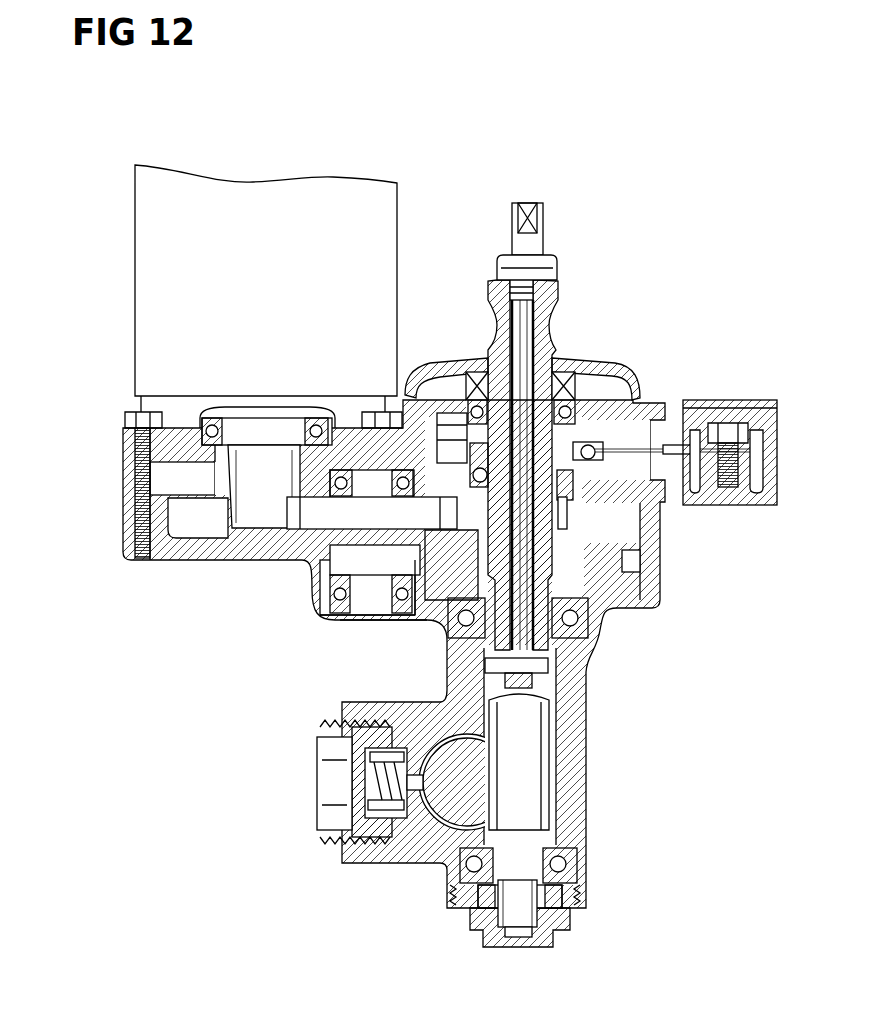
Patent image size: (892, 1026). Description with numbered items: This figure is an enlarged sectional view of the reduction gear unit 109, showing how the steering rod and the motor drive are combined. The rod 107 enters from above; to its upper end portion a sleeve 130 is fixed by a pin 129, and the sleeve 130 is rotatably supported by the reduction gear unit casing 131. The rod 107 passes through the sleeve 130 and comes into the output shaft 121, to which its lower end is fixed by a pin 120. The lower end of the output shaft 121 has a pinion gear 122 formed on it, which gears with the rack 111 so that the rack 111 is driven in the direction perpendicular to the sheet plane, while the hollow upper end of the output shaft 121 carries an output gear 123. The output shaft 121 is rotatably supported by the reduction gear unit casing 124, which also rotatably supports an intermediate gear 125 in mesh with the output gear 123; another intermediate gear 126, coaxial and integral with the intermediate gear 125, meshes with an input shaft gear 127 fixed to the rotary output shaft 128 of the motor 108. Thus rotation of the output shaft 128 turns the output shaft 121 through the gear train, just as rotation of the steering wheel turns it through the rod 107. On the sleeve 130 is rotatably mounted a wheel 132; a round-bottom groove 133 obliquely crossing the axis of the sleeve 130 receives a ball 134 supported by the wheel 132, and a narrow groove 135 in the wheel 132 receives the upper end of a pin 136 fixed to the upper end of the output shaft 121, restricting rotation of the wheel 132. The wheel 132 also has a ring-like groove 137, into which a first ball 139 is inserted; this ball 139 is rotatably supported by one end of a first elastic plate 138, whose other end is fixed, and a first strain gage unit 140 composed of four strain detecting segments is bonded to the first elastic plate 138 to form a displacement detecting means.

The rod 107 is at (546, 238).
The motor 108 is at (135, 278).
The reduction gear unit 109 is at (108, 518).
The rack 111 is at (430, 812).
The pin 120 is at (552, 672).
The output shaft 121 is at (582, 660).
The pinion gear 122 is at (580, 818).
The output gear 123 is at (640, 560).
The reduction gear unit casing 124 is at (378, 618).
The intermediate gear 125 is at (306, 600).
The intermediate gear 126 is at (300, 565).
The input shaft gear 127 is at (225, 520).
The rotary output shaft of the motor 128 is at (262, 412).
The pin 129 is at (559, 268).
The sleeve 130 is at (558, 300).
The reduction gear unit casing 131 is at (640, 400).
The wheel 132 is at (460, 372).
The round-bottom groove 133 is at (452, 505).
The ball 134 is at (470, 478).
The narrow groove 135 is at (660, 522).
The pin 136 is at (568, 512).
The ring-like groove 137 is at (414, 415).
The first elastic plate 138 is at (662, 448).
The first ball 139 is at (603, 450).
The first strain gage unit 140 is at (706, 450).